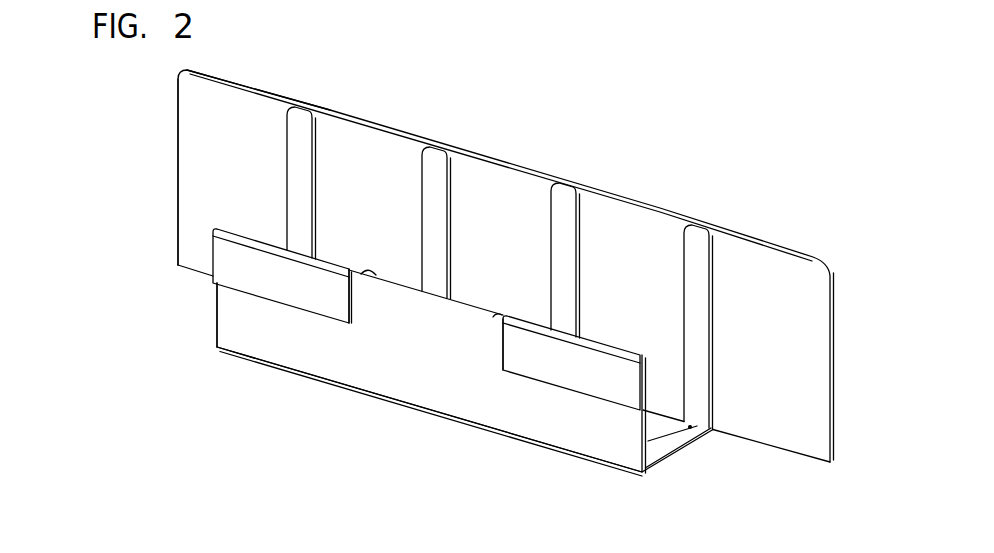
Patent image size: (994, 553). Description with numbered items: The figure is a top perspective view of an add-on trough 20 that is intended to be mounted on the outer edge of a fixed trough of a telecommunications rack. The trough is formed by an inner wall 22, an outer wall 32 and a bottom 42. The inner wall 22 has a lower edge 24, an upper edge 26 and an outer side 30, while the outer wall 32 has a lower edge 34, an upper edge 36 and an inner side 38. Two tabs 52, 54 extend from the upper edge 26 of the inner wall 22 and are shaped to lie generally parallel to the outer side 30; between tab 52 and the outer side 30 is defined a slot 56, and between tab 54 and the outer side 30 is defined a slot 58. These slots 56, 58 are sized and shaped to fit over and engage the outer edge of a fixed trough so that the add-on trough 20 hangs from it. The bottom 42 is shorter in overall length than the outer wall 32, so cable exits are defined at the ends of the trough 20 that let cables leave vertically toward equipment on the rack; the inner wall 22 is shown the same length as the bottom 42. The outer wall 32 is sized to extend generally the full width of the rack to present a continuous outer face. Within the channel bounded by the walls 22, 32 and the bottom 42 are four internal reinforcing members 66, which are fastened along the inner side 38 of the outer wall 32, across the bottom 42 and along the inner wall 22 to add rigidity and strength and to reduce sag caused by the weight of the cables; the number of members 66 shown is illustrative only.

The add-on trough 20 is at (161, 197).
The inner wall 22 is at (229, 336).
The lower edge 24 is at (623, 471).
The upper edge 26 is at (385, 282).
The outer side 30 is at (437, 387).
The outer wall 32 is at (797, 351).
The lower edge 34 is at (180, 266).
The upper edge 36 is at (778, 242).
The inner side 38 is at (749, 355).
The bottom 42 is at (656, 428).
The tab 52 is at (530, 362).
The tab 54 is at (248, 273).
The slot 56 is at (502, 352).
The slot 58 is at (352, 303).
The internal reinforcing members 66 is at (302, 117).